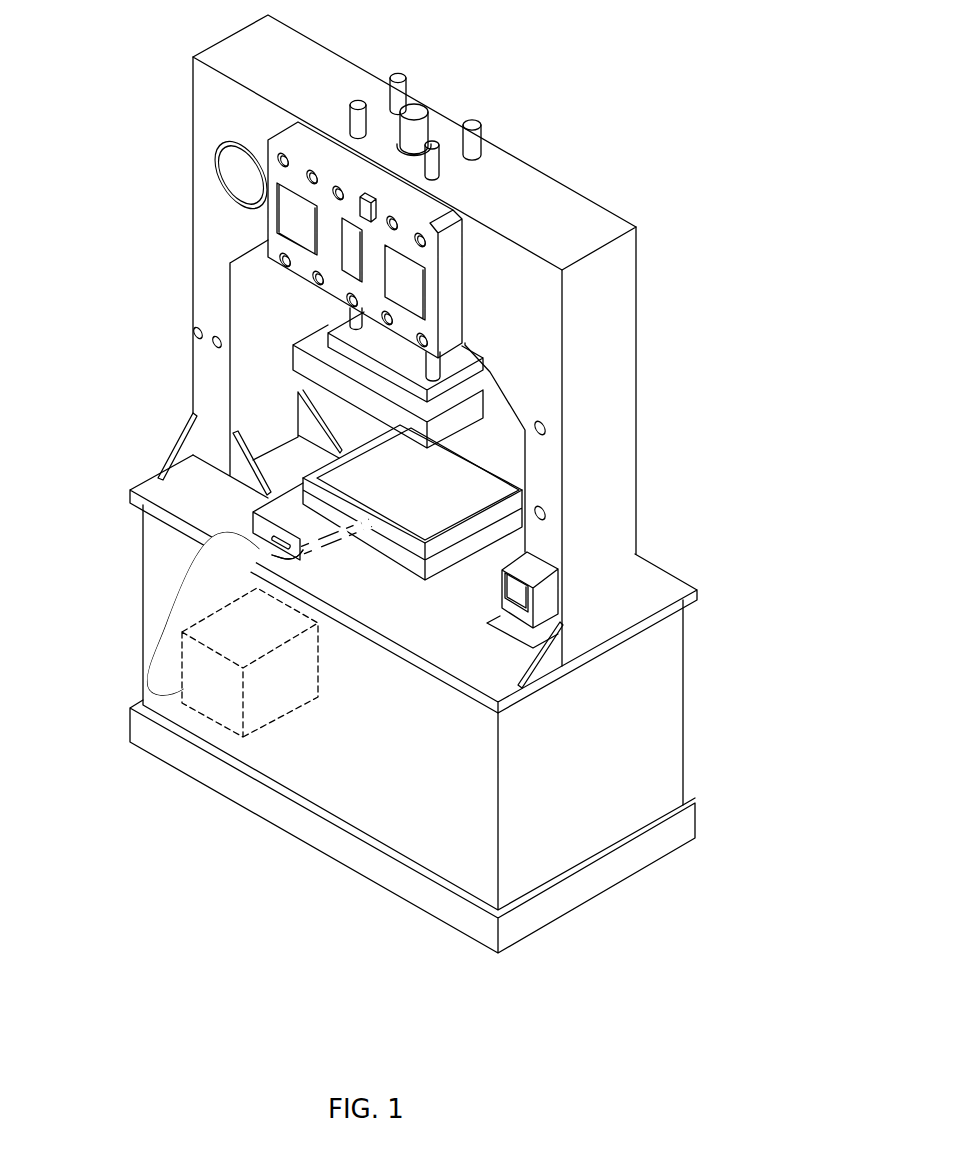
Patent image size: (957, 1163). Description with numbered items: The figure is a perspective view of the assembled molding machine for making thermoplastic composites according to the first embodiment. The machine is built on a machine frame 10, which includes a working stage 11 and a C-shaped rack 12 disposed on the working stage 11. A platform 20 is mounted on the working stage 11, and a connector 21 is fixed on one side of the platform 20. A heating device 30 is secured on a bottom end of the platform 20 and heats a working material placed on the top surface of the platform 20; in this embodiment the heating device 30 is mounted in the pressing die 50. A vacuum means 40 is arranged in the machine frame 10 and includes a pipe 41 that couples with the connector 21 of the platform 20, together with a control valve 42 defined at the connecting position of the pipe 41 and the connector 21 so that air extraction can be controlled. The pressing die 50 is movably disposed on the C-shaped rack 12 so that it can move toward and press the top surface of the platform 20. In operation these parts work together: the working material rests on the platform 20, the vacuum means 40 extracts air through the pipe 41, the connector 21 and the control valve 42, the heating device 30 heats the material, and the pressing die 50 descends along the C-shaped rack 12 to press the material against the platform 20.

The machine frame 10 is at (675, 709).
The working stage 11 is at (157, 487).
The C-shaped rack 12 is at (585, 212).
The platform 20 is at (290, 445).
The connector 21 is at (363, 522).
The heating device 30 is at (450, 565).
The vacuum means 40 is at (283, 700).
The pipe 41 is at (167, 613).
The control valve 42 is at (310, 560).
The pressing die 50 is at (298, 362).